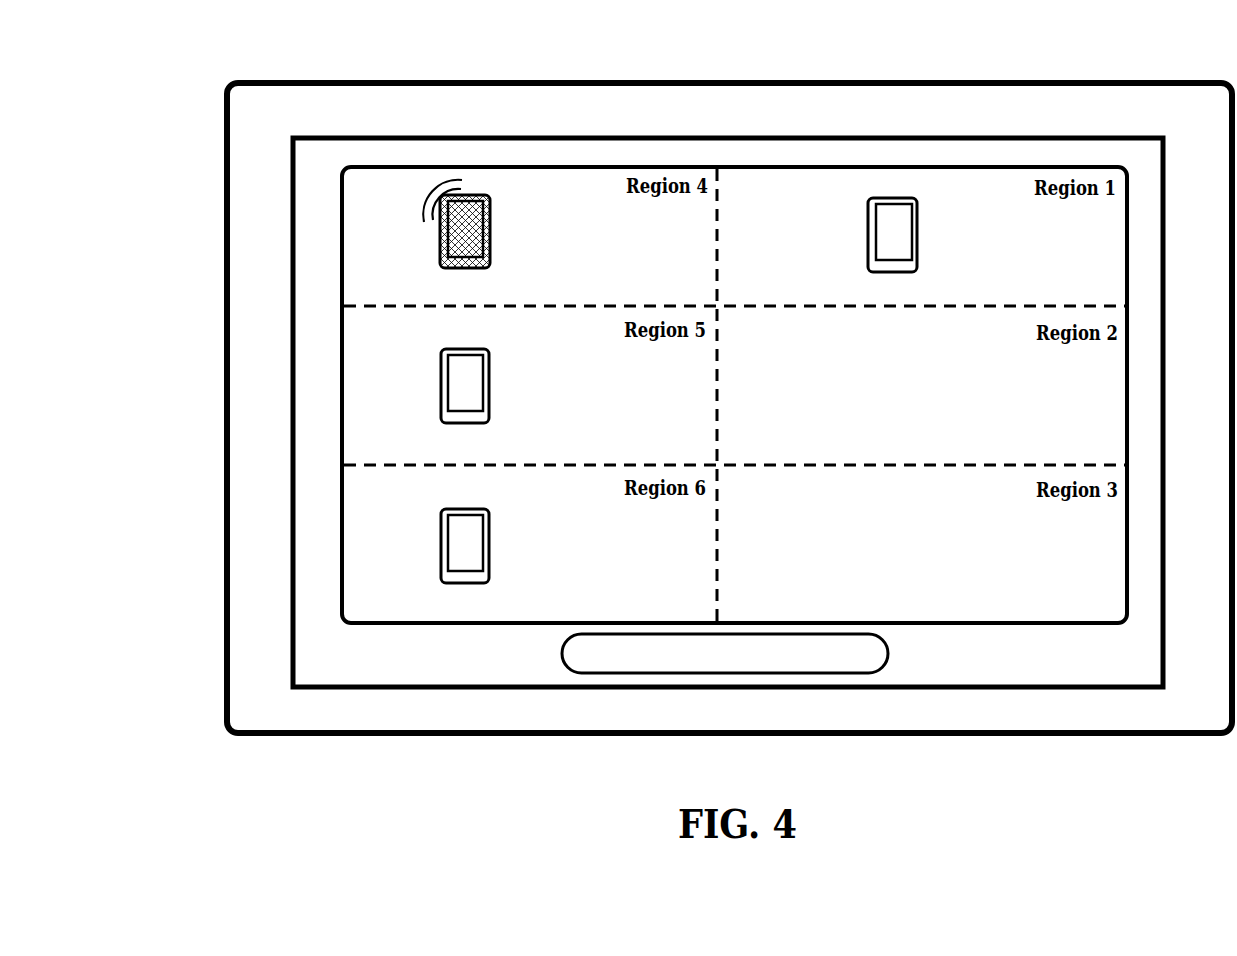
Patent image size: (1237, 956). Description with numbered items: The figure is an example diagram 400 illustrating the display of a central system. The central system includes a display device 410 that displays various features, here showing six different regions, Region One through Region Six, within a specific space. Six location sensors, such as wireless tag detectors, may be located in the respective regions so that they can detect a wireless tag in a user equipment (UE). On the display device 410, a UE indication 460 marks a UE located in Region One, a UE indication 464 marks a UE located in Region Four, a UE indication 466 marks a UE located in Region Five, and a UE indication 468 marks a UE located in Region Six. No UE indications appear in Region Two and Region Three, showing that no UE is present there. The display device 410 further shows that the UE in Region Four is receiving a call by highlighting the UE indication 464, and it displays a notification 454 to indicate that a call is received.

The example diagram 400 is at (206, 74).
The display device 410 is at (772, 82).
The notification 454 is at (888, 650).
The UE indication 460 is at (917, 234).
The UE indication 464 is at (490, 226).
The UE indication 466 is at (489, 386).
The UE indication 468 is at (489, 541).